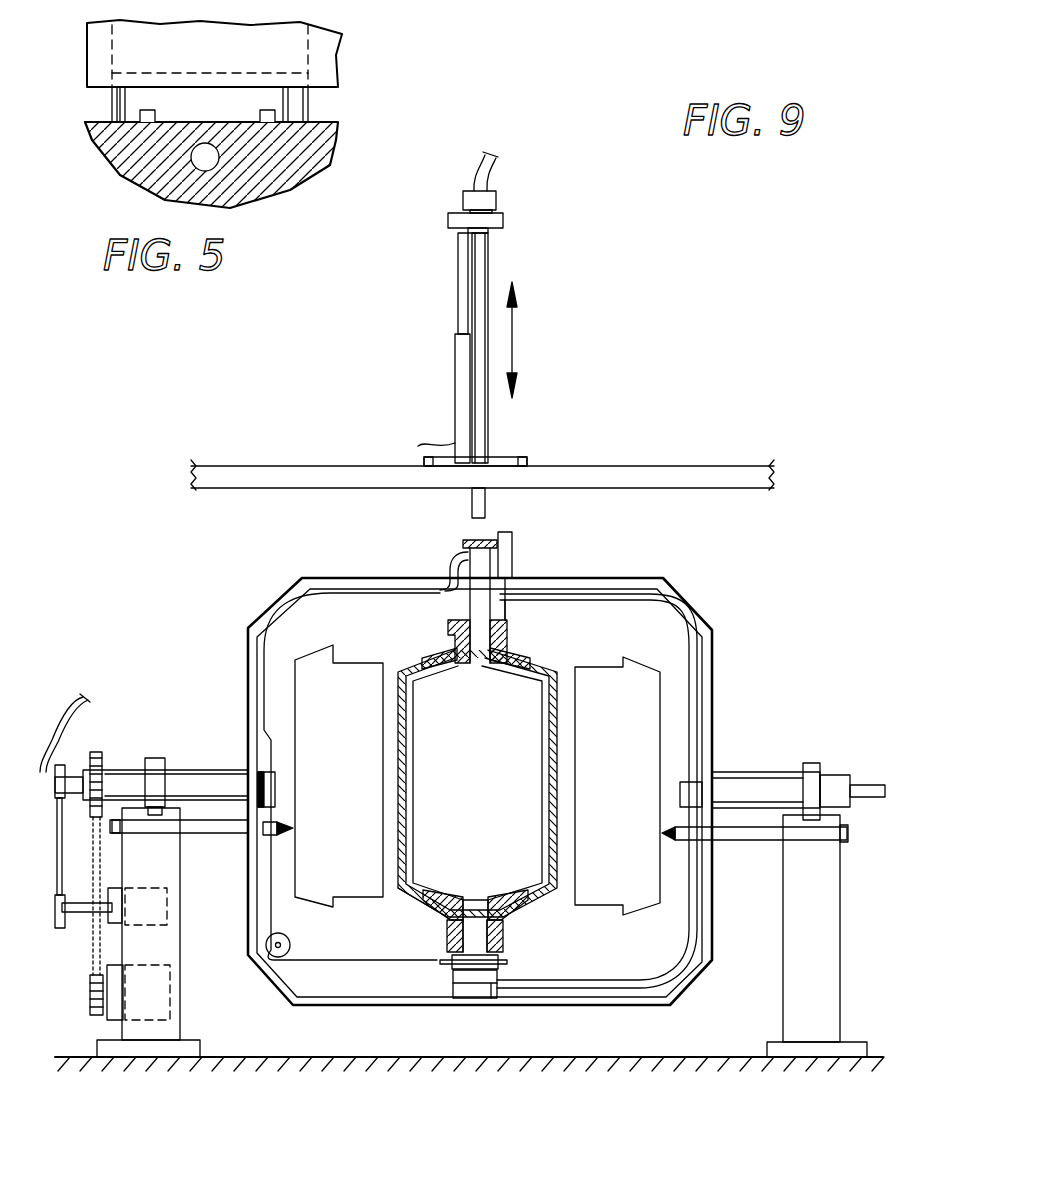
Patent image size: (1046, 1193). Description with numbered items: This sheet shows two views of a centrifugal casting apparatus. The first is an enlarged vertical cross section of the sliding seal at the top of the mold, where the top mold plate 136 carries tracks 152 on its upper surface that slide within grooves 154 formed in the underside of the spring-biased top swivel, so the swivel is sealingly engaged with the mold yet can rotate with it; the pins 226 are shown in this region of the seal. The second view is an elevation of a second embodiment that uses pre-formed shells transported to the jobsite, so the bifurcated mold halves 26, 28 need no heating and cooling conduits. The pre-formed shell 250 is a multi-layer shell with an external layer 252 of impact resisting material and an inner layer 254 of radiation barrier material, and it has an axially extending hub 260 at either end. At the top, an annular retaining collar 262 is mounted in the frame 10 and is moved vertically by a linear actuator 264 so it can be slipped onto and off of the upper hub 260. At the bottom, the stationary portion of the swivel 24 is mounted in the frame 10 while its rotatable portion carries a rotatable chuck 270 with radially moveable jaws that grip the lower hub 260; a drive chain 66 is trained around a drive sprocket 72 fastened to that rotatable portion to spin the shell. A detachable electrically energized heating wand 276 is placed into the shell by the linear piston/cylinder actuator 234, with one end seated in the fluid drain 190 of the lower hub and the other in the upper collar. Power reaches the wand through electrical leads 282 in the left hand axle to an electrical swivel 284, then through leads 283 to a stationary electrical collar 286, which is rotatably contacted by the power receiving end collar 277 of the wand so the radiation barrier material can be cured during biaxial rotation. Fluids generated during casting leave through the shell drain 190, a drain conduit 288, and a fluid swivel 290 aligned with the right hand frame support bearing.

In FIG. 5, the tracks 152 is at (162, 121).
In FIG. 5, the guide pin 226 is at (310, 100).
In FIG. 5, the grooves 154 is at (275, 120).
In FIG. 5, the top mold plate 136 is at (265, 185).
In FIG. 9, the power receiving end collar 277 is at (492, 235).
In FIG. 9, the heating wand 276 is at (489, 272).
In FIG. 9, the linear piston/cylinder actuator 234 is at (455, 393).
In FIG. 9, the electrical collar 286 is at (452, 538).
In FIG. 9, the linear actuator 264 is at (512, 558).
In FIG. 9, the frame 10 is at (722, 583).
In FIG. 9, the leads 283 is at (288, 598).
In FIG. 9, the drain conduit 288 is at (610, 988).
In FIG. 9, the annular retaining collar 262 is at (505, 620).
In FIG. 9, the hub 260 is at (510, 648).
In FIG. 9, the pre-formed shell 250 is at (545, 661).
In FIG. 9, the inner layer 254 is at (430, 893).
In FIG. 9, the fluid drain 190 is at (478, 912).
In FIG. 9, the external layer 252 is at (415, 898).
In FIG. 9, the rotatable chuck 270 is at (507, 948).
In FIG. 9, the drive sprocket 72 is at (445, 961).
In FIG. 9, the bottom mold swivel 24 is at (442, 980).
In FIG. 9, the drive chain 66 is at (310, 963).
In FIG. 9, the mold half 26 is at (355, 800).
In FIG. 9, the mold half 28 is at (630, 793).
In FIG. 9, the electrical swivel 284 is at (286, 770).
In FIG. 9, the electrical leads 282 is at (86, 697).
In FIG. 9, the fluid swivel 290 is at (692, 782).